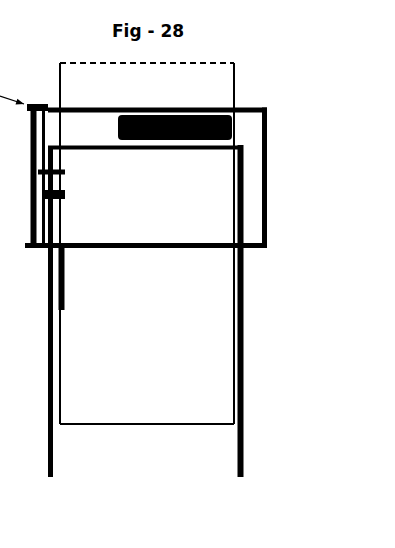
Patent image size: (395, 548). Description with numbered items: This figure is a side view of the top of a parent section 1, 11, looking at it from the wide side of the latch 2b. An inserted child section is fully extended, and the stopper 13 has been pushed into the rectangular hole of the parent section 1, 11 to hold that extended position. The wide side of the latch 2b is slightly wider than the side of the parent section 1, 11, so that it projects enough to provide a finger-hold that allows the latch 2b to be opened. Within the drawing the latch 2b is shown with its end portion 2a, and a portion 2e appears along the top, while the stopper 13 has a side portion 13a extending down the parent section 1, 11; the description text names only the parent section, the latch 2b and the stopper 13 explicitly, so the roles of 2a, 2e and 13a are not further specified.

The parent section 1 is at (38, 363).
The backlight end portion 2a is at (67, 196).
The wide side of the latch 2b is at (270, 183).
The light source 2e is at (177, 110).
The parent section 11 is at (147, 243).
The stopper 13 is at (70, 170).
The light guide plate side portion 13a is at (65, 358).